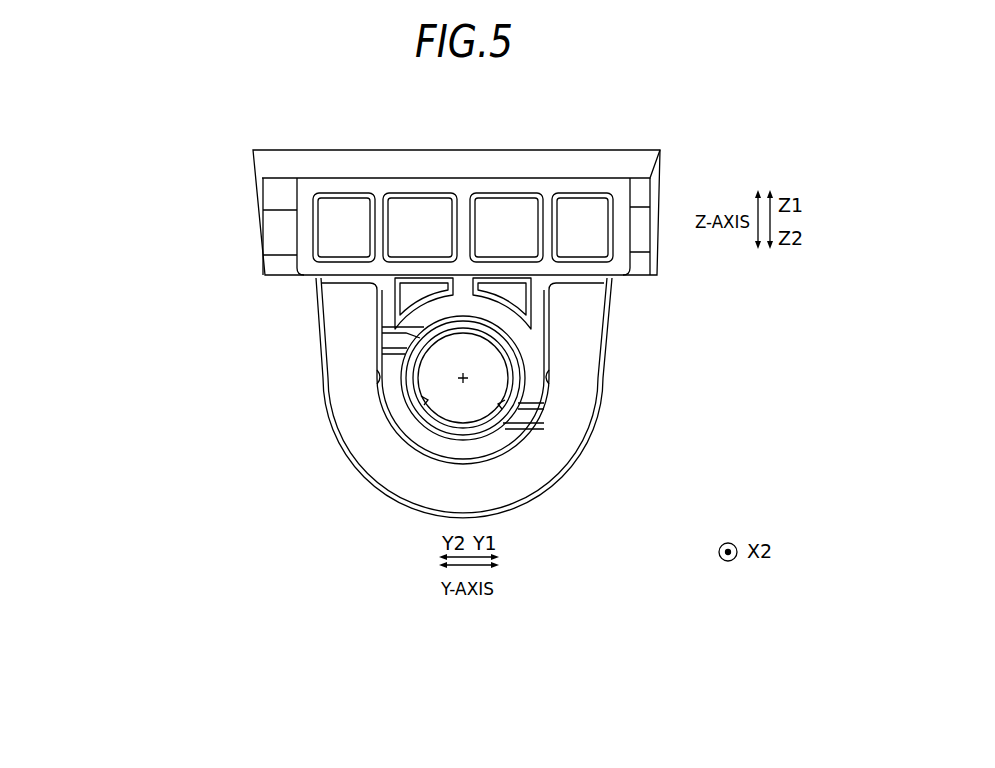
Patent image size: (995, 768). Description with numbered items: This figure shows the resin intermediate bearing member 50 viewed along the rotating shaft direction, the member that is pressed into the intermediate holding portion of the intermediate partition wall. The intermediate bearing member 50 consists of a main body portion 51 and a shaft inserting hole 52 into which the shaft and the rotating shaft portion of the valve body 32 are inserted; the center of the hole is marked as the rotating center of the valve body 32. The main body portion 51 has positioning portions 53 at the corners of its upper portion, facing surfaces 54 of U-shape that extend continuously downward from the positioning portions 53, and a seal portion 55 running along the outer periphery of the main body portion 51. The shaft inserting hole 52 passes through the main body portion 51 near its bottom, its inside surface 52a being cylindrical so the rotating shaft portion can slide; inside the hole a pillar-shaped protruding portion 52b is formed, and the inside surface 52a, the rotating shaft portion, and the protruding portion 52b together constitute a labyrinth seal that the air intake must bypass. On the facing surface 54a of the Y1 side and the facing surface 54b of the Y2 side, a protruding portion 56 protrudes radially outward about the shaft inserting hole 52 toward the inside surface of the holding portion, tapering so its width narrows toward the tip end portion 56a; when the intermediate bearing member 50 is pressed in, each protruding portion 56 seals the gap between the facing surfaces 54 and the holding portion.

The intermediate bearing member 50 is at (581, 307).
The main body portion 51 is at (462, 163).
The shaft inserting hole 52 is at (497, 428).
The inside surface 52a is at (420, 436).
The protruding portion 52b is at (423, 425).
The positioning portions 53 is at (343, 283).
The facing surfaces 54 is at (463, 373).
The facing surface 54a is at (544, 330).
The facing surface 54b is at (382, 330).
The seal portion 55 is at (510, 488).
The protruding portion 56 is at (697, 403).
The tip end portion 56a is at (424, 401).
The valve body 32 is at (466, 380).